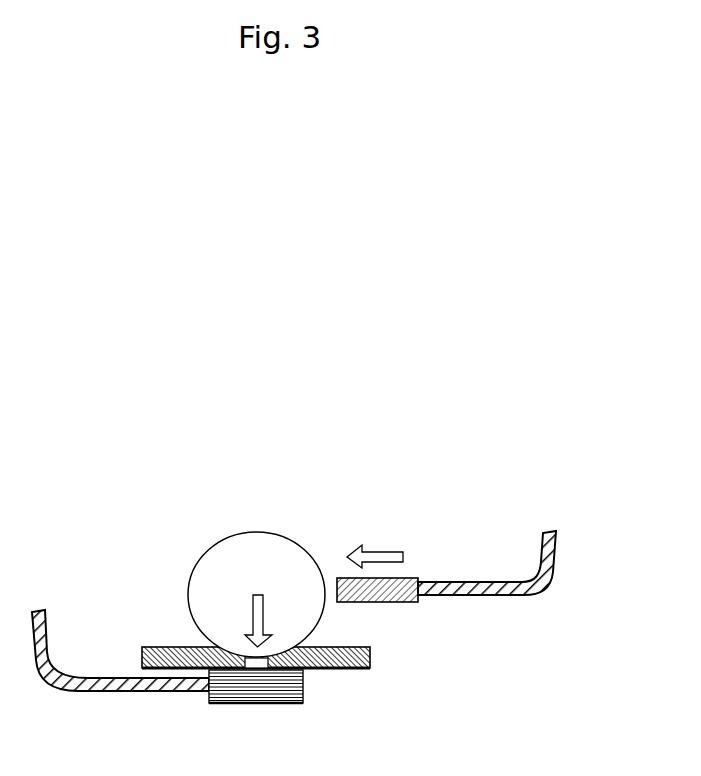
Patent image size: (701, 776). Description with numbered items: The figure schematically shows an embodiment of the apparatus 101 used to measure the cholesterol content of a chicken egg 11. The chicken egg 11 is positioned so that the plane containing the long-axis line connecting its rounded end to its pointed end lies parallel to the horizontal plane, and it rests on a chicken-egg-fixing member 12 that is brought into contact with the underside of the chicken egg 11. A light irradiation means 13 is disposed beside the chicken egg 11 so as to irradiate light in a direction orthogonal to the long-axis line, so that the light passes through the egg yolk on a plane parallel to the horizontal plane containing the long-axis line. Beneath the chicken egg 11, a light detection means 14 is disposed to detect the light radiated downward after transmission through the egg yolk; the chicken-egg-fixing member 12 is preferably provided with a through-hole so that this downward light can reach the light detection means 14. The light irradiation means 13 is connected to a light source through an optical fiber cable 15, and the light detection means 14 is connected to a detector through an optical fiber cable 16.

The apparatus 101 is at (547, 443).
The chicken egg 11 is at (282, 536).
The chicken-egg-fixing member 12 is at (370, 655).
The light irradiation means 13 is at (408, 578).
The light detection means 14 is at (255, 703).
The optical fiber cable 15 is at (472, 580).
The optical fiber cable 16 is at (142, 693).